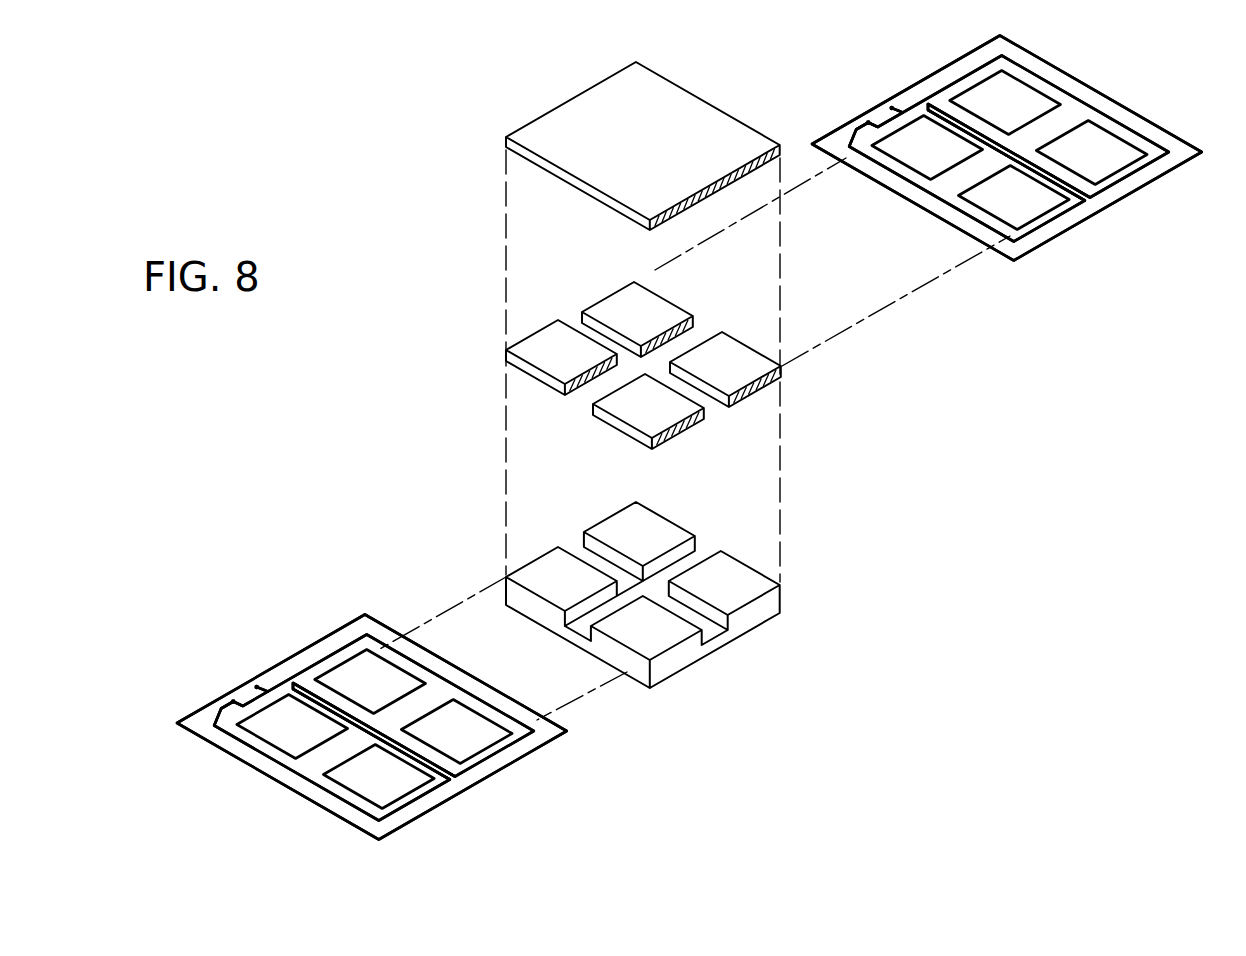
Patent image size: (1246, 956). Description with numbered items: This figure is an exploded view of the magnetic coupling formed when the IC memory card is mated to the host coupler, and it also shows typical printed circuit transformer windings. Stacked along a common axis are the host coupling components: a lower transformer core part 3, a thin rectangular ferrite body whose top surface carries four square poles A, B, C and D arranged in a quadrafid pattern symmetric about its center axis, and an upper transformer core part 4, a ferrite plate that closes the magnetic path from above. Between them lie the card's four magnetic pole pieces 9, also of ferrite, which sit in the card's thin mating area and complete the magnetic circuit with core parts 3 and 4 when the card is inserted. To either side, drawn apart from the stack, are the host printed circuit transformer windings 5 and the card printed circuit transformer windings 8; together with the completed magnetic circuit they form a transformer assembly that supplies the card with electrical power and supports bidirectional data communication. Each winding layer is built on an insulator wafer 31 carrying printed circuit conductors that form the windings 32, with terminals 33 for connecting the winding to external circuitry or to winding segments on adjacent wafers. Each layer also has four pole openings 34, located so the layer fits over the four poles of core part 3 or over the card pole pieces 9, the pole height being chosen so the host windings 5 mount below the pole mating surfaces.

The lower transformer core part 3 is at (506, 578).
The upper transformer core part 4 is at (506, 141).
The printed circuit transformer windings 5 is at (527, 709).
The printed circuit transformer windings 8 is at (1162, 130).
The magnetic pole pieces 9 is at (506, 353).
The insulator wafer 31 is at (1113, 201).
The windings 32 is at (1057, 217).
The terminals 33 is at (891, 108).
The pole openings 34 is at (1047, 185).